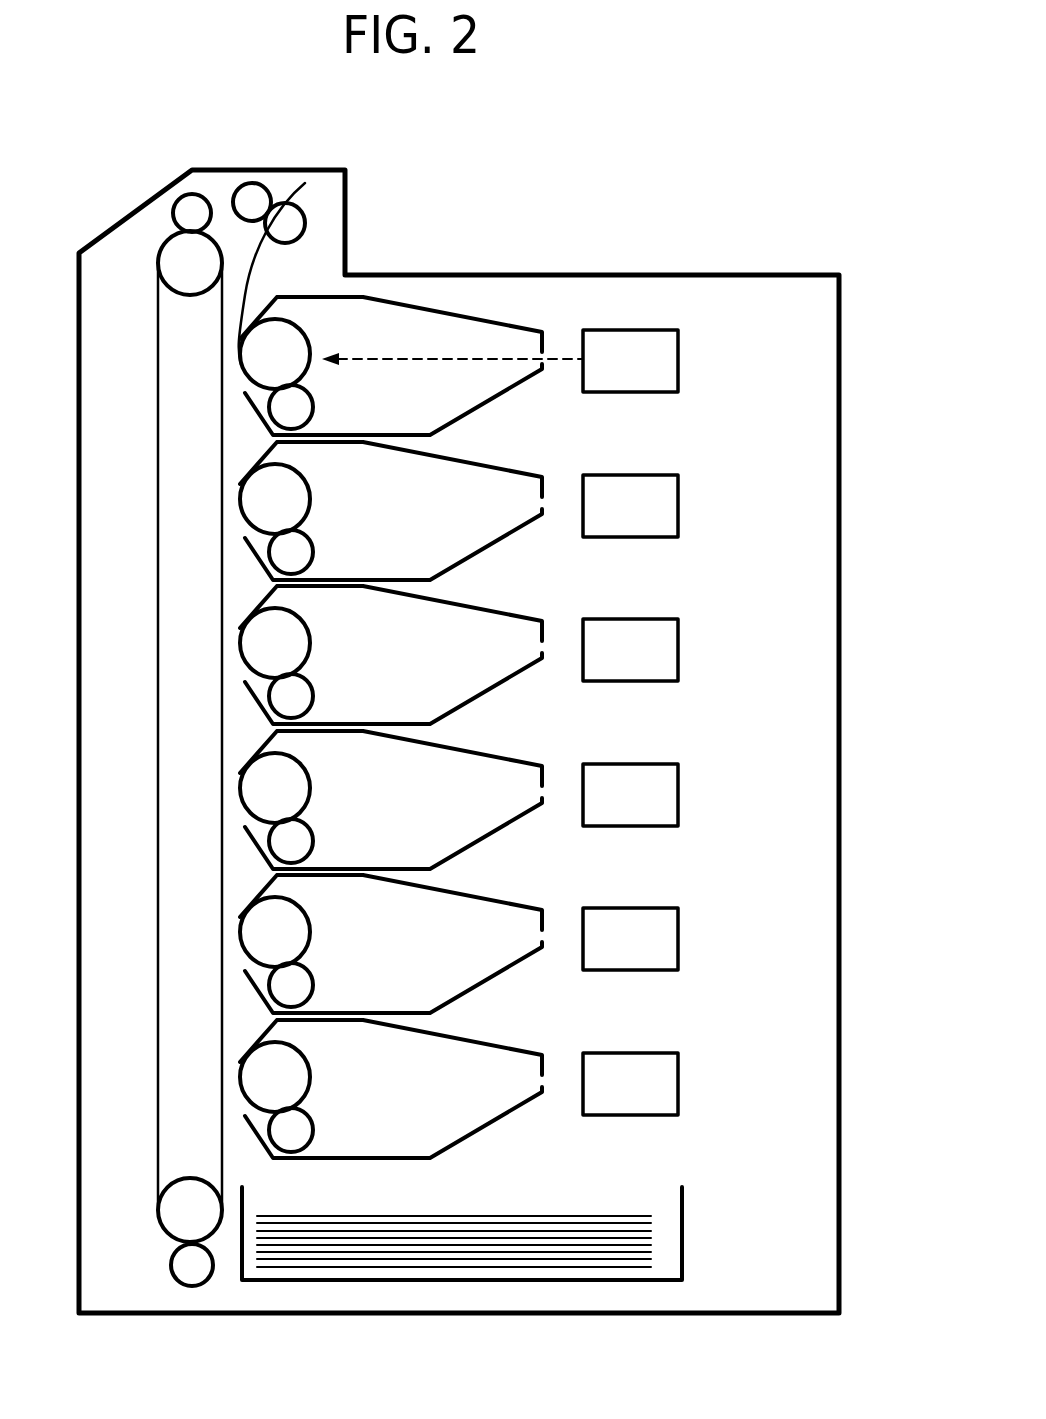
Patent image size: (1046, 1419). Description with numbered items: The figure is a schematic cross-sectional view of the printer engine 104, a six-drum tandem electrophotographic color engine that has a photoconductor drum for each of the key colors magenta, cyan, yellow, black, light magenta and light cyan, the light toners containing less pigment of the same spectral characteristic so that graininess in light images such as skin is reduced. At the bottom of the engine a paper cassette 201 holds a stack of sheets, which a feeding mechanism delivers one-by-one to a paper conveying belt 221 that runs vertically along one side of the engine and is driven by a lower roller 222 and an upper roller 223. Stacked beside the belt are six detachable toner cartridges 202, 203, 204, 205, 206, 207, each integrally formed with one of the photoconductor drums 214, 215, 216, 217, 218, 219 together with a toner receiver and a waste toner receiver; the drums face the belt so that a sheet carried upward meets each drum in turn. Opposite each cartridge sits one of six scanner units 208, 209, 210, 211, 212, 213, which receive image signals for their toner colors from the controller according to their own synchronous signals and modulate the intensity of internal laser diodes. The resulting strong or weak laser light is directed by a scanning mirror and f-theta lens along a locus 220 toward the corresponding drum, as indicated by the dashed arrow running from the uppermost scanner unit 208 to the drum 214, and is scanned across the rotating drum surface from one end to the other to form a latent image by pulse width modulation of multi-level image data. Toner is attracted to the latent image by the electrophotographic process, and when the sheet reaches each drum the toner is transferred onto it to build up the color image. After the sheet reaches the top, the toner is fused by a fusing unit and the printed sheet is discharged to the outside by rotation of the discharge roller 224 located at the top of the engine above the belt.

The printer engine 104 is at (632, 1314).
The paper cassette 201 is at (393, 1281).
The toner cartridge 202 is at (493, 398).
The toner cartridge 203 is at (493, 543).
The toner cartridge 204 is at (493, 687).
The toner cartridge 205 is at (493, 832).
The toner cartridge 206 is at (493, 976).
The toner cartridge 207 is at (493, 1121).
The scanner unit 208 is at (658, 392).
The scanner unit 209 is at (658, 537).
The scanner unit 210 is at (658, 681).
The scanner unit 211 is at (658, 826).
The scanner unit 212 is at (658, 970).
The scanner unit 213 is at (658, 1115).
The photoconductor drum 214 is at (293, 330).
The photoconductor drum 215 is at (293, 481).
The photoconductor drum 216 is at (293, 625).
The photoconductor drum 217 is at (293, 770).
The photoconductor drum 218 is at (293, 914).
The photoconductor drum 219 is at (293, 1059).
The locus 220 is at (475, 358).
The paper conveying belt 221 is at (158, 495).
The roller 222 is at (183, 1197).
The roller 223 is at (177, 255).
The discharge roller 224 is at (252, 192).